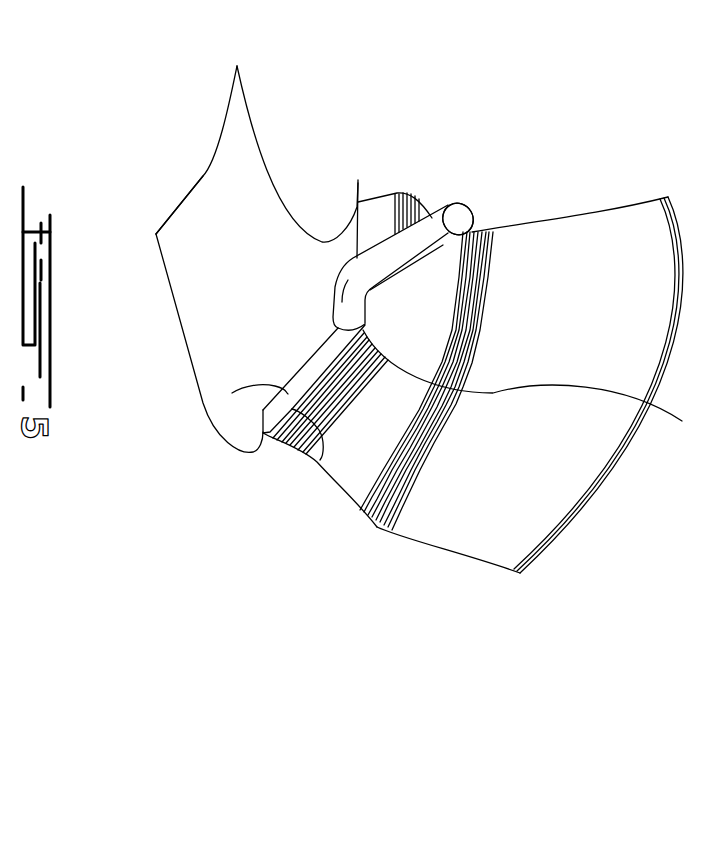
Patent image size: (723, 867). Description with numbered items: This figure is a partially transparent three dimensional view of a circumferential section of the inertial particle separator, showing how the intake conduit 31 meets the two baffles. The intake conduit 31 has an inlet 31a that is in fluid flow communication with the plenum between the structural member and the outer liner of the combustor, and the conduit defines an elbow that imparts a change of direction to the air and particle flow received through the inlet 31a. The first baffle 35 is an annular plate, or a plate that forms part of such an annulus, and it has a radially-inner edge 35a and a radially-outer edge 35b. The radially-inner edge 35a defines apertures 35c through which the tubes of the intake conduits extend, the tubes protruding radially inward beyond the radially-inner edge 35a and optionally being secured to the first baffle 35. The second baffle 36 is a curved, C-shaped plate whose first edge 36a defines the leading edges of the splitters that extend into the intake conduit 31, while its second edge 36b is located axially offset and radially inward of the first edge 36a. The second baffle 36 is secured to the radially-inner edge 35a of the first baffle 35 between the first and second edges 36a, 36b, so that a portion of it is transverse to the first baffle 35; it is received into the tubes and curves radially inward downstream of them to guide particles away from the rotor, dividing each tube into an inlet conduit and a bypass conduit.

The intake conduit 31 is at (420, 233).
The inlet 31a is at (477, 213).
The first baffle 35 is at (423, 542).
The radially-inner edge 35a is at (320, 460).
The radially-outer edge 35b is at (517, 575).
The apertures 35c is at (539, 389).
The second baffle 36 is at (194, 373).
The first edge 36a is at (236, 391).
The second edge 36b is at (203, 176).